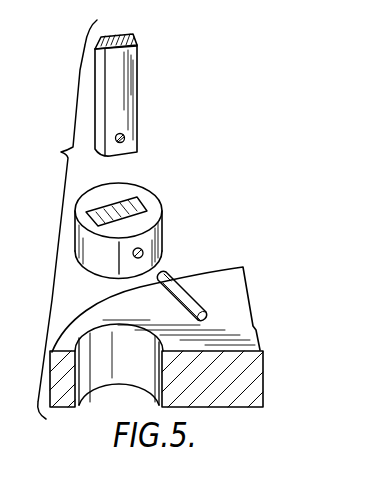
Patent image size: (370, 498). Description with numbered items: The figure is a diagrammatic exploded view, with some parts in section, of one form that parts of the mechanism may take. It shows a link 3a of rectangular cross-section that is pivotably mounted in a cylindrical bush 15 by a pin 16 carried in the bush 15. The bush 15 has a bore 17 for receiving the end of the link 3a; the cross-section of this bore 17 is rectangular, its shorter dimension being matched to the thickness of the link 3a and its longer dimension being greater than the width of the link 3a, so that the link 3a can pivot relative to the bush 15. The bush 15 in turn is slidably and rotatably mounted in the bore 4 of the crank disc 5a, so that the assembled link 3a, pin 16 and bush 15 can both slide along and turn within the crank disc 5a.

The link 3a is at (118, 87).
The bore 4 is at (137, 371).
The crank disc 5a is at (243, 302).
The cylindrical bush 15 is at (147, 240).
The pin 16 is at (179, 288).
The bore 17 is at (137, 199).